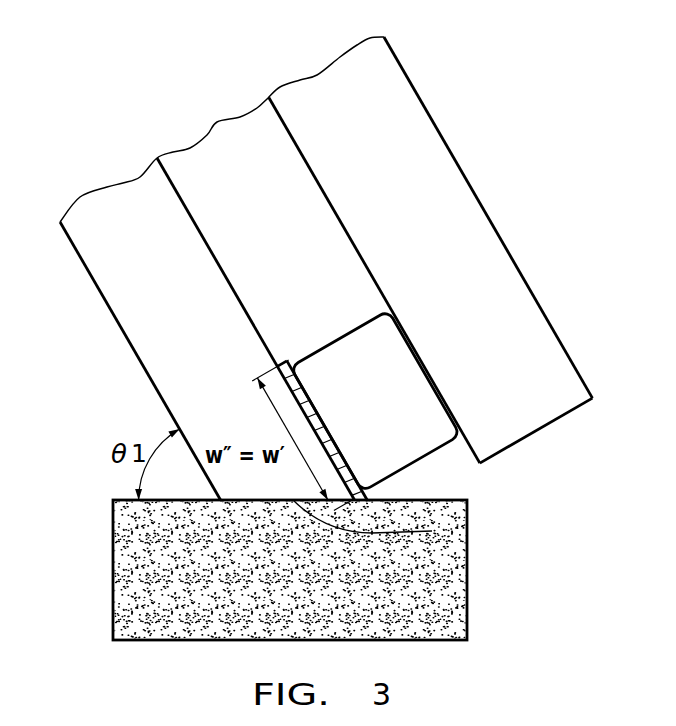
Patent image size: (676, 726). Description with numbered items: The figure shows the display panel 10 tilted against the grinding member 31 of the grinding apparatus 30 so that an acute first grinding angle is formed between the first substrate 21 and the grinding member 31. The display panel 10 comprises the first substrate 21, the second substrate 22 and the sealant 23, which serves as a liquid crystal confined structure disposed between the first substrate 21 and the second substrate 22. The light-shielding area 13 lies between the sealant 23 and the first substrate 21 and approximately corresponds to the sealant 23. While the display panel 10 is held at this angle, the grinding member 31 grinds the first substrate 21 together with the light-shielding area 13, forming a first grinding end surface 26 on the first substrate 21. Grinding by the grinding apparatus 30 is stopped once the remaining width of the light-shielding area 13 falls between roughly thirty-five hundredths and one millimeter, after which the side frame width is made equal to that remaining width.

The display panel 10 is at (553, 105).
The light-shielding area 13 is at (256, 386).
The first substrate 21 is at (104, 281).
The second substrate 22 is at (518, 290).
The sealant 23 is at (358, 338).
The first grinding end surface 26 is at (432, 531).
The grinding apparatus 30 is at (337, 594).
The grinding member 31 is at (457, 577).